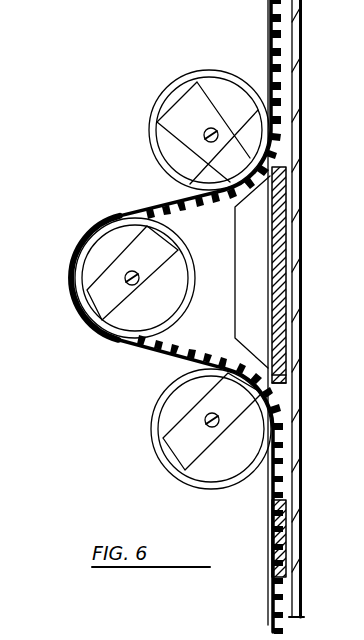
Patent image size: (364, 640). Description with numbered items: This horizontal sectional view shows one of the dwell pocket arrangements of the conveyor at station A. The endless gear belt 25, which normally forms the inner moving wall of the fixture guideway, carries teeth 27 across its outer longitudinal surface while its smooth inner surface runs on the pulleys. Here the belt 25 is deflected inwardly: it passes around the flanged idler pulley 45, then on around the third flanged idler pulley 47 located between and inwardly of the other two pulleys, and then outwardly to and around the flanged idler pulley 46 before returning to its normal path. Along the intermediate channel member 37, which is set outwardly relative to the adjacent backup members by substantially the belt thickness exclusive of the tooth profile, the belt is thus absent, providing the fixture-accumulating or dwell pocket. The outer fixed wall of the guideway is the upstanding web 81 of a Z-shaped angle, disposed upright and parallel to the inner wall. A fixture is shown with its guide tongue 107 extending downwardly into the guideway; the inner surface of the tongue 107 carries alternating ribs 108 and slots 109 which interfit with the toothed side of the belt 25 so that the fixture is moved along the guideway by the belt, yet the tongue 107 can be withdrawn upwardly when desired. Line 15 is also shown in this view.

The toothed belt 15 is at (245, 312).
The endless gear belt 25 is at (172, 316).
The teeth 27 is at (210, 317).
The channel member 37 is at (289, 272).
The flanged idler pulley 45 is at (183, 429).
The flanged idler pulley 46 is at (191, 125).
The third flanged idler pulley 47 is at (114, 275).
The upstanding web 81 is at (297, 68).
The guide tongue 107 is at (299, 227).
The ribs 108 is at (312, 407).
The slots 109 is at (312, 389).